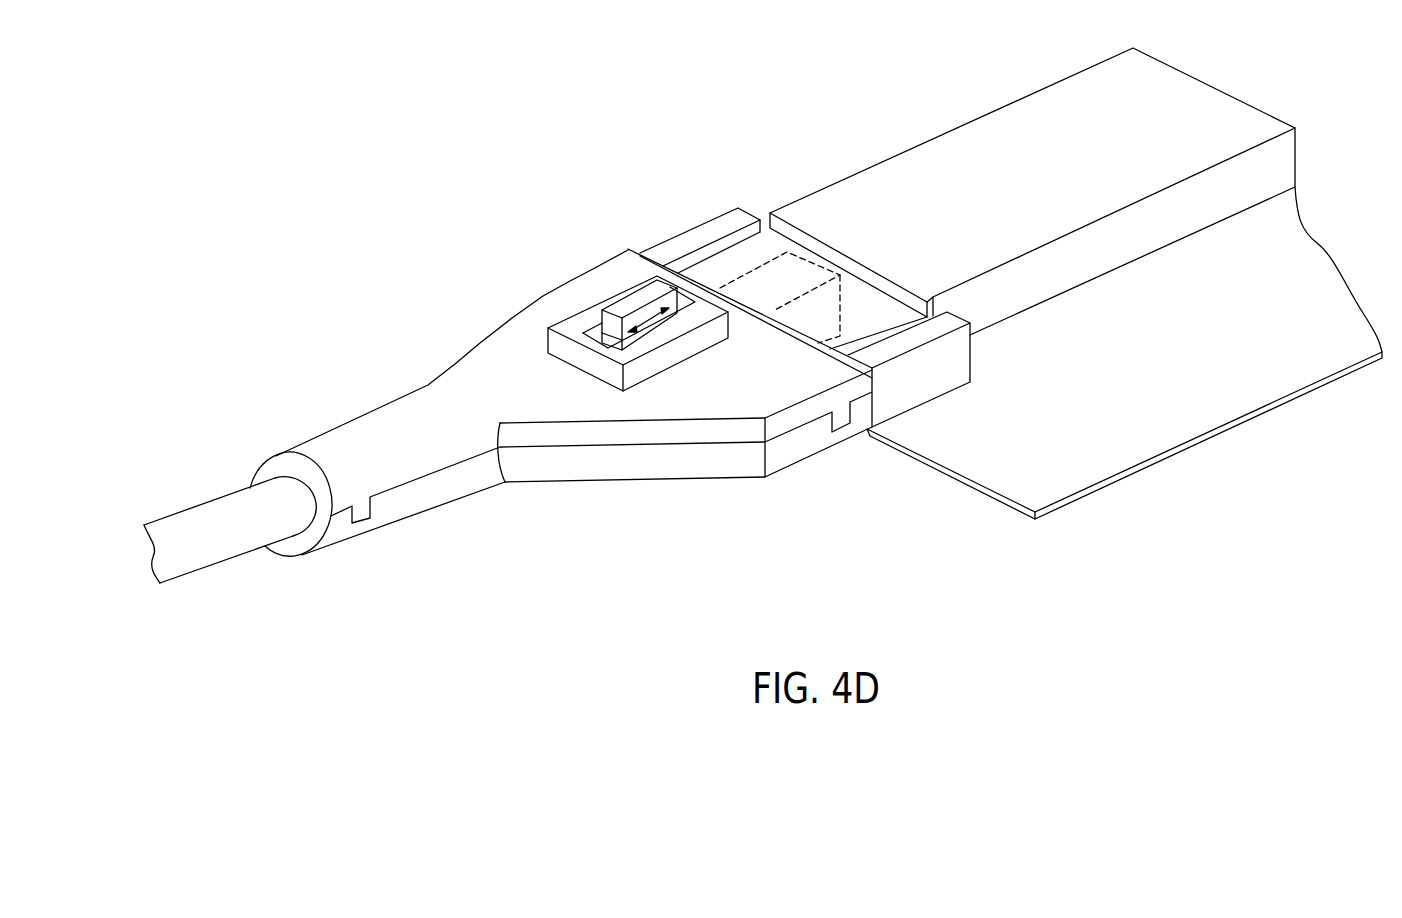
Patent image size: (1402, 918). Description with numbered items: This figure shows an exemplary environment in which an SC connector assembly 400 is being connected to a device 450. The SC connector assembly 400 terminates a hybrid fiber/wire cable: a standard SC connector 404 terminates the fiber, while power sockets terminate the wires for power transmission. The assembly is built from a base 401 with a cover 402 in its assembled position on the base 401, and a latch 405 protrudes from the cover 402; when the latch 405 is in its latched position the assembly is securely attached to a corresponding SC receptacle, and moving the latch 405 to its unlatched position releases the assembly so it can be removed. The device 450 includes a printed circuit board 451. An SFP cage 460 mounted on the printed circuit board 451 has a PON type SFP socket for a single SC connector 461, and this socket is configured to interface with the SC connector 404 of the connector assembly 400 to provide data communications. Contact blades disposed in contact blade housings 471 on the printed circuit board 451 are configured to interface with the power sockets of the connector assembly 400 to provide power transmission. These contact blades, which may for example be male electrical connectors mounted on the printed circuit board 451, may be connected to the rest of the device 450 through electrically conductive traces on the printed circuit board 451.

The SC connector assembly 400 is at (448, 330).
The base 401 is at (652, 466).
The cover 402 is at (578, 294).
The SC connector 404 is at (786, 258).
The latch 405 is at (647, 295).
The device 450 is at (905, 118).
The printed circuit board (PCB) 451 is at (1195, 412).
The SFP cage 460 is at (1118, 243).
The PON type SFP socket for a single SC connector 461 is at (868, 298).
The contact blade housings 471 is at (694, 237).